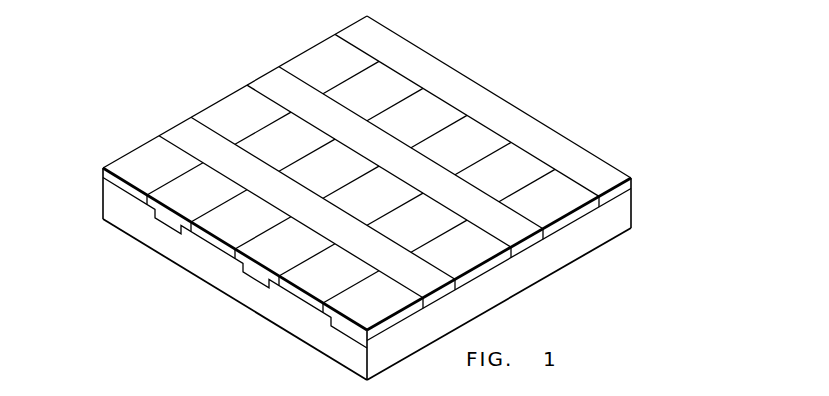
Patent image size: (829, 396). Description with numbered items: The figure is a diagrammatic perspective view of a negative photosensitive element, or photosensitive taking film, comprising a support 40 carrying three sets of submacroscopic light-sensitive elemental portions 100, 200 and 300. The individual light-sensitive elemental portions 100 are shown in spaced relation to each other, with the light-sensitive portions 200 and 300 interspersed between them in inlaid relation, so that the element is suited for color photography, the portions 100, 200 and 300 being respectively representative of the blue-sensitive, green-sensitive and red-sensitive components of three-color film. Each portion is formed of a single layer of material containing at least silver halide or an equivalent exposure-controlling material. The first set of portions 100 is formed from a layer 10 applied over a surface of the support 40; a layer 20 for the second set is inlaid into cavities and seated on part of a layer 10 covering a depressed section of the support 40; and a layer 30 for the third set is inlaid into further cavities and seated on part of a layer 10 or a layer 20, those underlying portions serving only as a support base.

The layer 10 is at (116, 198).
The layer 20 is at (103, 183).
The layer 30 is at (633, 182).
The support 40 is at (506, 290).
The light-sensitive elemental portions 100 is at (177, 201).
The light-sensitive elemental portions 200 is at (133, 174).
The light-sensitive elemental portions 300 is at (297, 97).